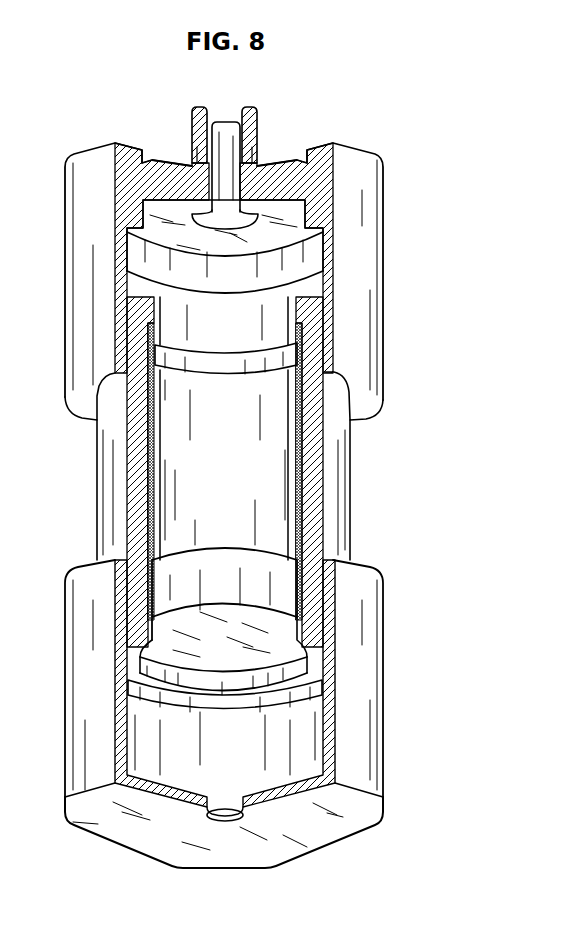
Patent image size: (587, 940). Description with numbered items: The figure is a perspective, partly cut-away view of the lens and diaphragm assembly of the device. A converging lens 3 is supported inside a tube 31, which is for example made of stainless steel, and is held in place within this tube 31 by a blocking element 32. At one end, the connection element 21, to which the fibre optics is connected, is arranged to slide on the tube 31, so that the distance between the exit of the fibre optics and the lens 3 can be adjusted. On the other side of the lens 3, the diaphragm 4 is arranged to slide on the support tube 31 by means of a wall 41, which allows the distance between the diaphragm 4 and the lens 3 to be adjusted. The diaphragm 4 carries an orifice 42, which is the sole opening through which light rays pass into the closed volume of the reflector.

The connection element 21 is at (362, 296).
The tube 31 is at (340, 490).
The blocking element 32 is at (300, 472).
The converging lens 3 is at (263, 567).
The wall 41 is at (370, 668).
The diaphragm 4 is at (323, 823).
The orifice 42 is at (211, 824).